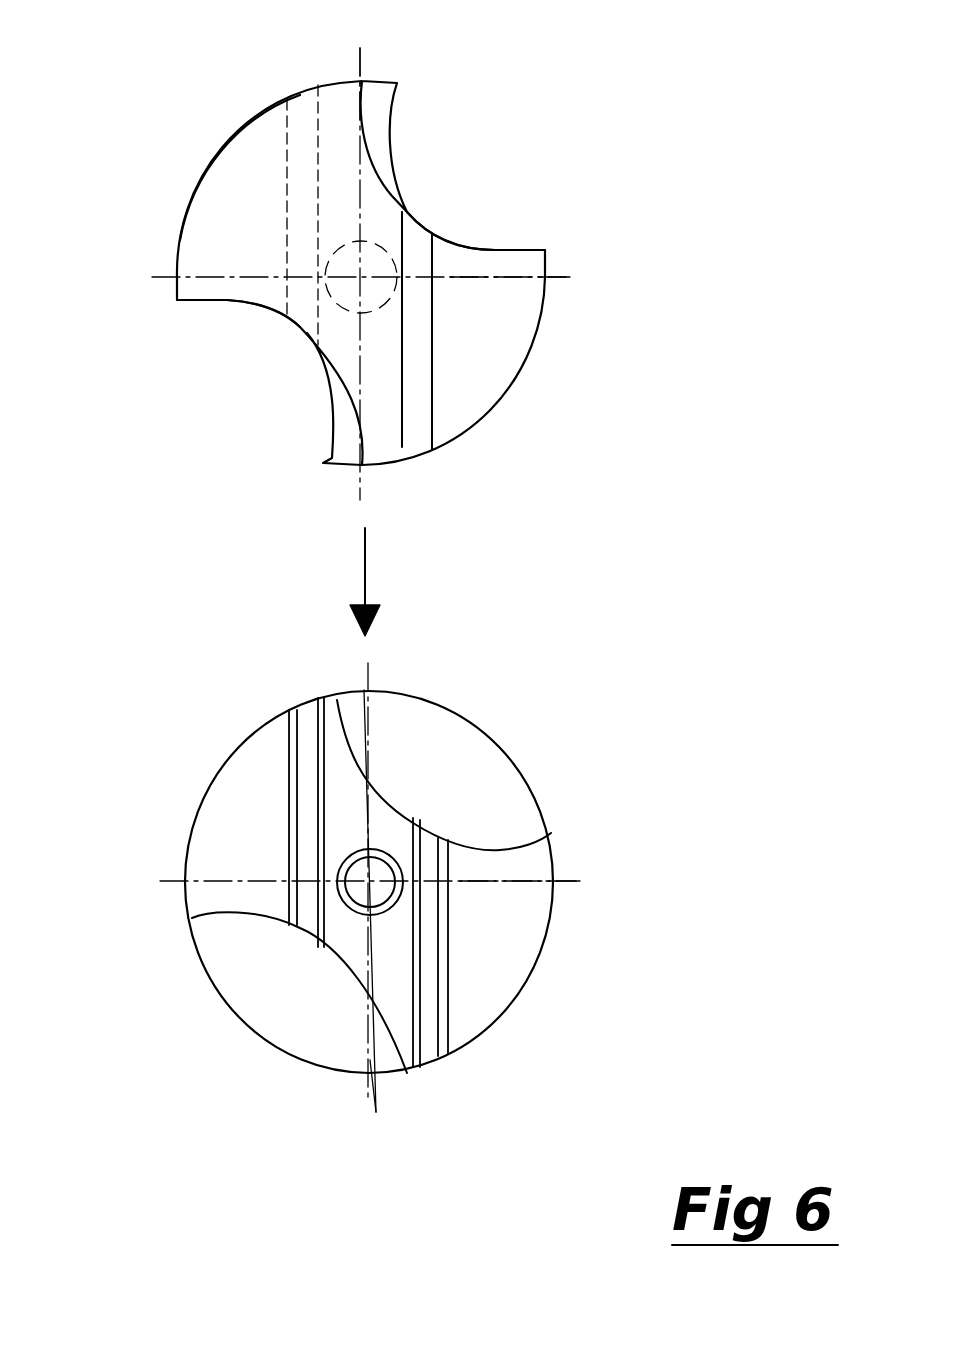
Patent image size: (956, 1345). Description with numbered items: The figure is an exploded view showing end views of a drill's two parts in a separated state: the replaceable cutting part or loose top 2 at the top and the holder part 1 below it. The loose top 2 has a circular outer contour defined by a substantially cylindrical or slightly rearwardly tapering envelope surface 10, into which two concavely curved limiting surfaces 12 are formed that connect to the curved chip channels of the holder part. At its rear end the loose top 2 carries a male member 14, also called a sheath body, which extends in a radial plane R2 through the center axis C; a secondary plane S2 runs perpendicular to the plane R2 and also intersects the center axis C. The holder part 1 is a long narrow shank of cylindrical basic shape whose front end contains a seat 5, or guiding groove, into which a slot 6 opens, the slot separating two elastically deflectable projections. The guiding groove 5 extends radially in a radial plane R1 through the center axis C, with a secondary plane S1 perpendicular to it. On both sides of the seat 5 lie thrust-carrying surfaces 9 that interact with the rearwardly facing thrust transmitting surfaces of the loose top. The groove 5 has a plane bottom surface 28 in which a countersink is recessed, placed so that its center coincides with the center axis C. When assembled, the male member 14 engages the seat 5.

The holder part 1 is at (167, 926).
The loose top 2 is at (172, 218).
The seat 5 is at (337, 920).
The slot 6 is at (380, 812).
The thrust-carrying surfaces 9 is at (371, 886).
The envelope surface 10 is at (228, 138).
The limiting surfaces 12 is at (497, 250).
The male member 14 is at (437, 365).
The bottom surface 28 is at (397, 995).
The center axis C is at (396, 283).
The radial plane R1 is at (375, 1093).
The radial plane R2 is at (364, 60).
The secondary plane S1 is at (563, 882).
The secondary plane S2 is at (562, 286).